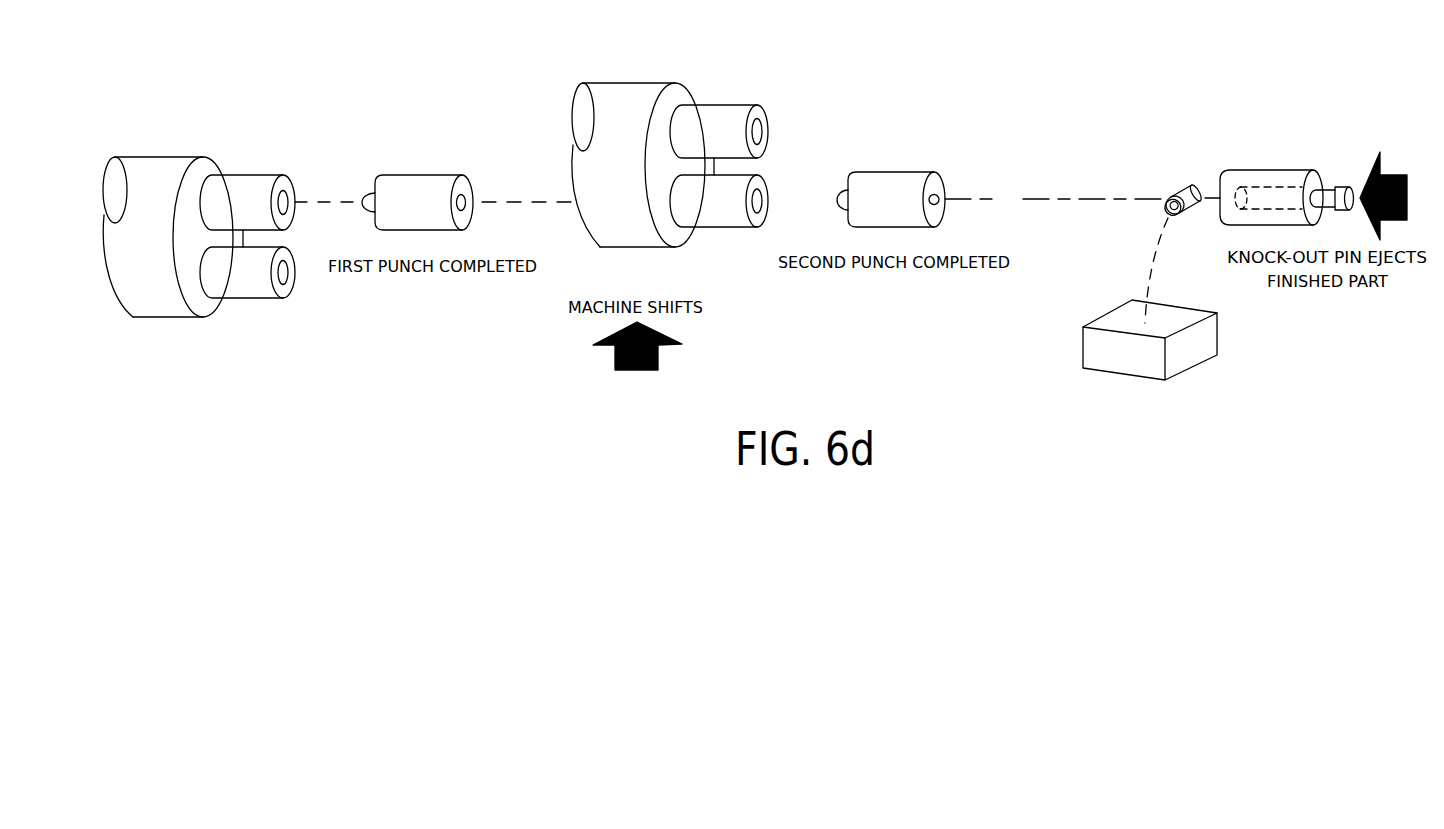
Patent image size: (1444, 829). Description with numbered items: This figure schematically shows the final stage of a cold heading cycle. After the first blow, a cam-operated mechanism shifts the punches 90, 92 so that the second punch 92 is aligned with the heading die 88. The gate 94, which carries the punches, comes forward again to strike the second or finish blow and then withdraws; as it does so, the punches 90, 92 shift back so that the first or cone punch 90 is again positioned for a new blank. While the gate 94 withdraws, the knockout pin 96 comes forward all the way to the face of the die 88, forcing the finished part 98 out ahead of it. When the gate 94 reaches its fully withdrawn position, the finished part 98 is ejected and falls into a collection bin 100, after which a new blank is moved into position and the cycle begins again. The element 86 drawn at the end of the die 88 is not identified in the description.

The punch button 86 is at (370, 194).
The heading die 88 is at (440, 170).
The first or cone punch 90 is at (289, 175).
The second punch 92 is at (262, 298).
The gate 94 is at (151, 170).
The knockout pin 96 is at (1340, 187).
The finished part 98 is at (1185, 190).
The collection bin 100 is at (1193, 367).